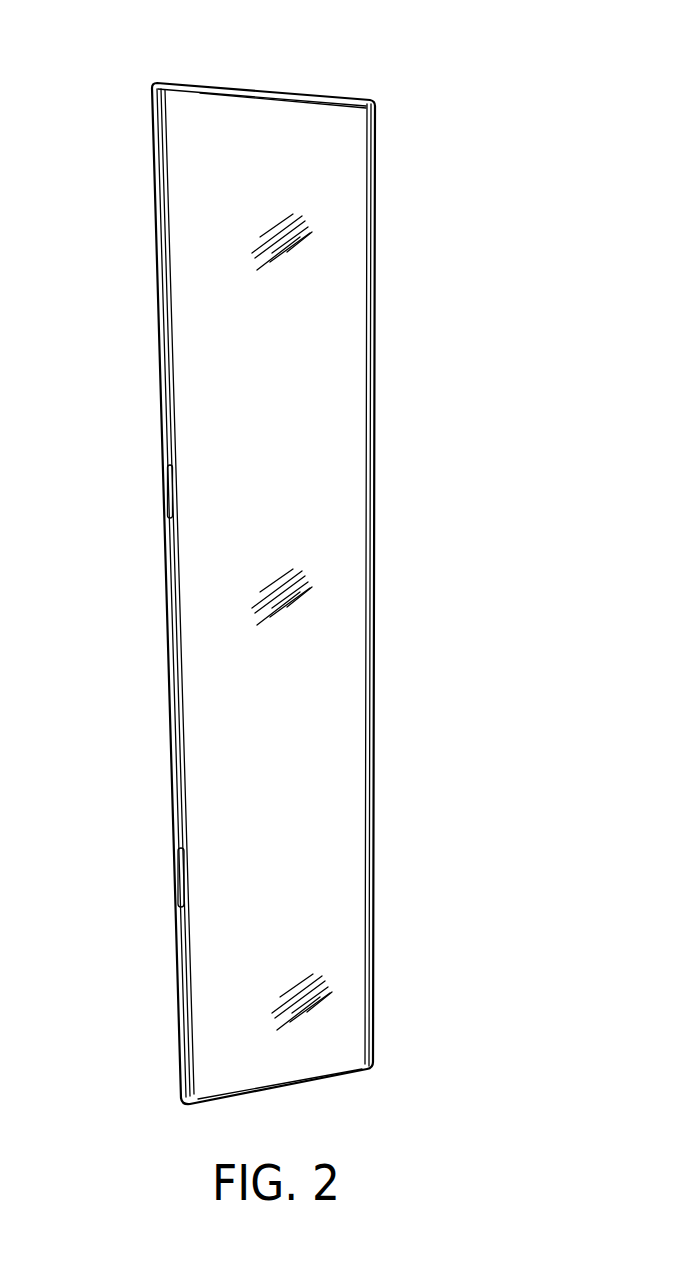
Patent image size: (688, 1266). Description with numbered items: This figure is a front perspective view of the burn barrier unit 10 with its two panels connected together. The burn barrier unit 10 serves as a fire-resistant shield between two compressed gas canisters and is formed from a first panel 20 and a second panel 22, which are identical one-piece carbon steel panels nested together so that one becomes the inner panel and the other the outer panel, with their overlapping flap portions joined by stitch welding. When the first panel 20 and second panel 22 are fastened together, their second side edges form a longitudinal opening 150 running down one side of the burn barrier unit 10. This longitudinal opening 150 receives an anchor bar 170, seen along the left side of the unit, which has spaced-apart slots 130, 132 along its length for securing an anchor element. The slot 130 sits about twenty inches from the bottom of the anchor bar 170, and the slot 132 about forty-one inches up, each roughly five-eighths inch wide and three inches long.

The burn barrier unit 10 is at (279, 77).
The first panel 20 is at (383, 480).
The second panel 22 is at (374, 584).
The longitudinal opening 150 is at (158, 195).
The anchor bar 170 is at (163, 308).
The slot 132 is at (165, 485).
The slot 130 is at (177, 895).